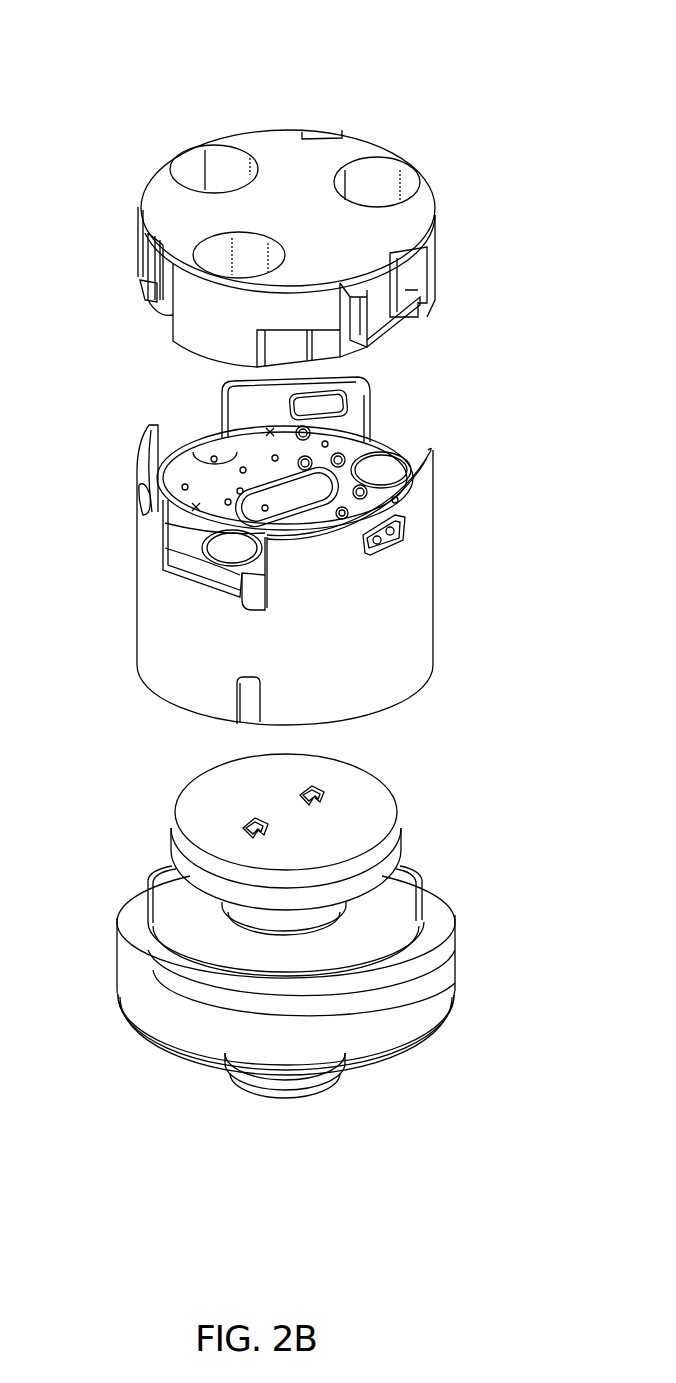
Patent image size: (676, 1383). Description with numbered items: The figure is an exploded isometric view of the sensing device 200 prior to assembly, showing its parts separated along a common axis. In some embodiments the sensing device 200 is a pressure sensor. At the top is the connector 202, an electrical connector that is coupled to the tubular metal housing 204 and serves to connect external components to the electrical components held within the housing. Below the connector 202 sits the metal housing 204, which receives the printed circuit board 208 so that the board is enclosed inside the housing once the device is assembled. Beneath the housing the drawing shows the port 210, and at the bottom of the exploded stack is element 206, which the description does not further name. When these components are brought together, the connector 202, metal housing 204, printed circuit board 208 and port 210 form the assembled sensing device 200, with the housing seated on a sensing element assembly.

The sensing device 200 is at (467, 24).
The connector 202 is at (150, 182).
The metal housing 204 is at (408, 598).
The base 206 is at (463, 922).
The printed circuit board 208 is at (392, 460).
The port 210 is at (370, 800).